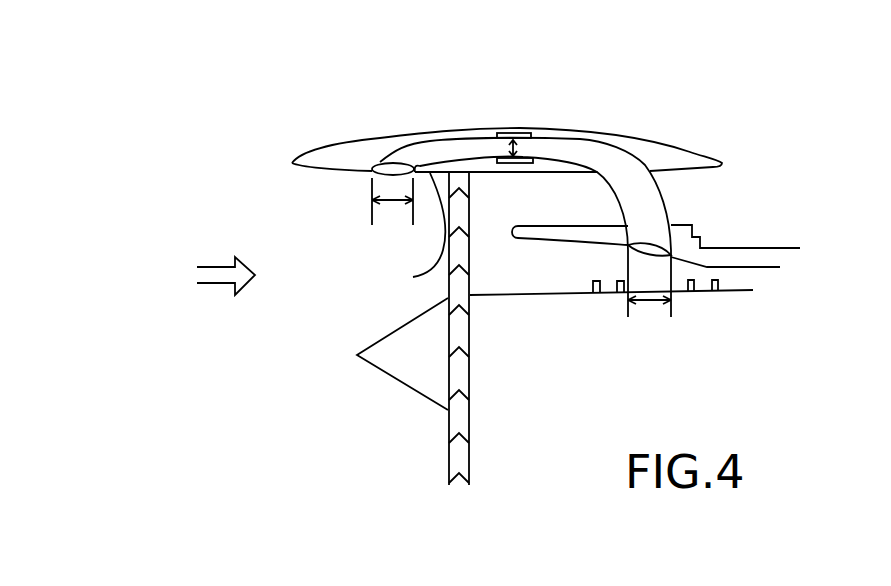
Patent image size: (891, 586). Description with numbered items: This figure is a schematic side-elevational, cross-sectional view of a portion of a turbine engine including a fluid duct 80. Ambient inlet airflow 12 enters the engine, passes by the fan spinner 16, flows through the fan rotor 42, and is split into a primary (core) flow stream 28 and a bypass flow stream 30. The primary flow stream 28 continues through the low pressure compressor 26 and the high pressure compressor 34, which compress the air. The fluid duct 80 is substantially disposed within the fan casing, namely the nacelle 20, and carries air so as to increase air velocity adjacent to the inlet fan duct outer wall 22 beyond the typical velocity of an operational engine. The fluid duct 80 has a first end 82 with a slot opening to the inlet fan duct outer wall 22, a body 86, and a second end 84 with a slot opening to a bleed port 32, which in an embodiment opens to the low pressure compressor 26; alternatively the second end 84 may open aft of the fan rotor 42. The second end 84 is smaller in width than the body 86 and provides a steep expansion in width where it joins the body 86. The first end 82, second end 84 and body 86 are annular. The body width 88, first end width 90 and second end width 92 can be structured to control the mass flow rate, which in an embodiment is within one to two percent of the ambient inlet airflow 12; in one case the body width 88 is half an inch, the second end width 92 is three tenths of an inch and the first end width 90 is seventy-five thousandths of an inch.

The ambient inlet airflow 12 is at (210, 276).
The fan spinner 16 is at (410, 347).
The nacelle 20 is at (417, 138).
The inlet fan duct outer wall 22 is at (413, 277).
The low pressure compressor 26 is at (595, 293).
The primary (core) flow stream 28 is at (579, 267).
The bypass flow stream 30 is at (567, 203).
The bleed port 32 is at (690, 291).
The high pressure compressor 34 is at (715, 291).
The fan rotor 42 is at (463, 288).
The fluid duct 80 is at (485, 153).
The first end 82 is at (380, 167).
The second end 84 is at (642, 240).
The body 86 is at (562, 148).
The body width 88 is at (518, 132).
The first end width 90 is at (392, 203).
The second end width 92 is at (650, 300).